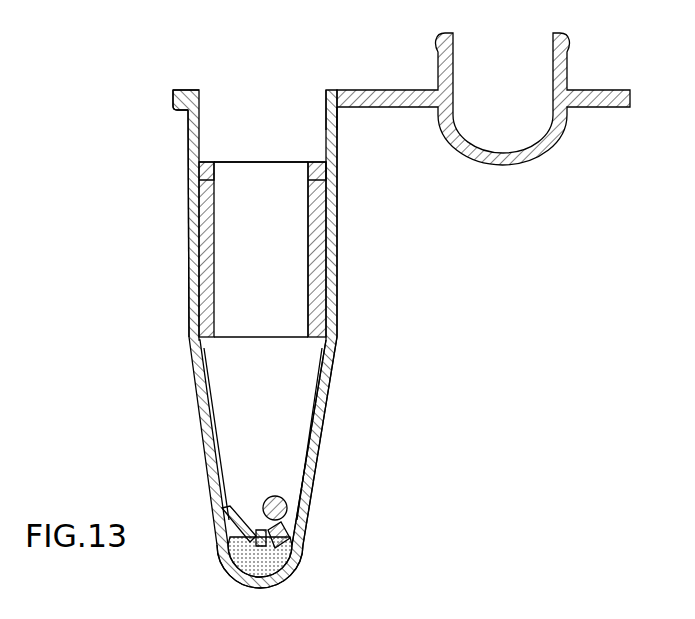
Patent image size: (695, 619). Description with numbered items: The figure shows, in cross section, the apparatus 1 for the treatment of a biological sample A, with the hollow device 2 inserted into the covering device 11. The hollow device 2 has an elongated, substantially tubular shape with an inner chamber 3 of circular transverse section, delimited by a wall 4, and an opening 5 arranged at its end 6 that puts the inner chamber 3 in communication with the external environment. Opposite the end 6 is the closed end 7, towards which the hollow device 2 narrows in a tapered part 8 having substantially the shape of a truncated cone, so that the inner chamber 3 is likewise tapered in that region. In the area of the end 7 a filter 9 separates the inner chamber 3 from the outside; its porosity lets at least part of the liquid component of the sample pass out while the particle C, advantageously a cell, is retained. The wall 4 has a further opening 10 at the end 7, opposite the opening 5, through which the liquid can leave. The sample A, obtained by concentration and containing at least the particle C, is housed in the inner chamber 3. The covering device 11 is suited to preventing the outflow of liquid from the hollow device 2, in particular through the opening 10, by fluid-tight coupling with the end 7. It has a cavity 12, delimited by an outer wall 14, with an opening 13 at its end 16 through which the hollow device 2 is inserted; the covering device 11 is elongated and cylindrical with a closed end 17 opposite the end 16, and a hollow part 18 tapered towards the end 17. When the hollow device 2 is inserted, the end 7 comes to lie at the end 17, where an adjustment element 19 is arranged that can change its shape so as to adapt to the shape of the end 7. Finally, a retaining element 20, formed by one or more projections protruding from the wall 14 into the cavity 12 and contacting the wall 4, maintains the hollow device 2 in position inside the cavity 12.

The apparatus 1 is at (165, 80).
The hollow device 2 is at (252, 143).
The inner chamber 3 is at (218, 292).
The wall 4 is at (308, 307).
The opening 5 is at (305, 157).
The end 6 is at (208, 155).
The closed end 7 is at (232, 538).
The tapered part 8 is at (227, 415).
The filter 9 is at (273, 550).
The further opening 10 is at (258, 533).
The covering device 11 is at (370, 82).
The cavity 12 is at (320, 123).
The opening 13 is at (197, 92).
The outer wall 14 is at (330, 240).
The end 16 is at (170, 93).
The closed end 17 is at (298, 580).
The tapered part 18 is at (325, 450).
The adjustment element 19 is at (253, 573).
The retaining element 20 is at (185, 225).
The sample A is at (278, 427).
The particle C is at (275, 496).